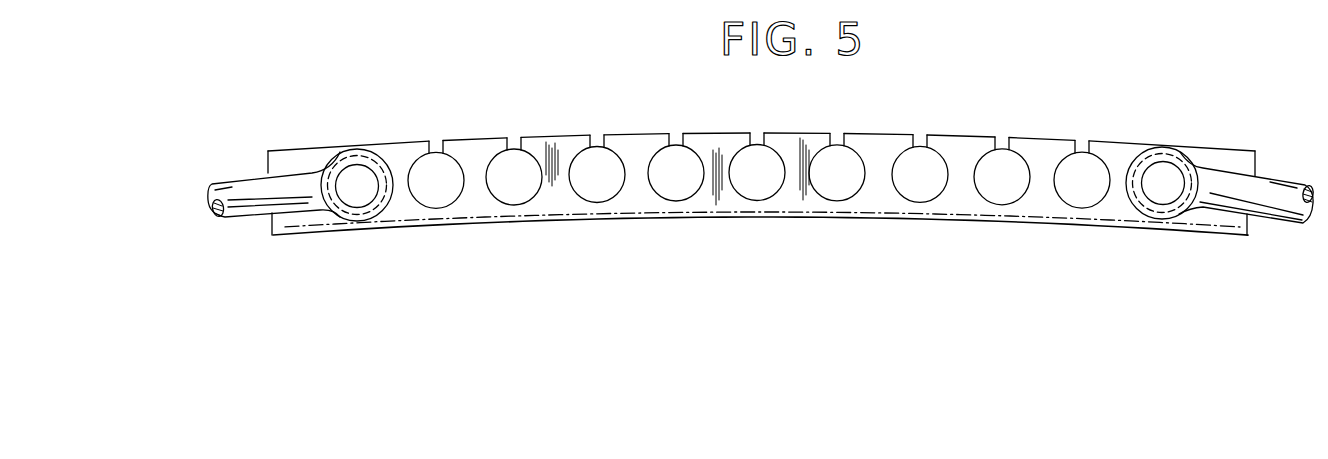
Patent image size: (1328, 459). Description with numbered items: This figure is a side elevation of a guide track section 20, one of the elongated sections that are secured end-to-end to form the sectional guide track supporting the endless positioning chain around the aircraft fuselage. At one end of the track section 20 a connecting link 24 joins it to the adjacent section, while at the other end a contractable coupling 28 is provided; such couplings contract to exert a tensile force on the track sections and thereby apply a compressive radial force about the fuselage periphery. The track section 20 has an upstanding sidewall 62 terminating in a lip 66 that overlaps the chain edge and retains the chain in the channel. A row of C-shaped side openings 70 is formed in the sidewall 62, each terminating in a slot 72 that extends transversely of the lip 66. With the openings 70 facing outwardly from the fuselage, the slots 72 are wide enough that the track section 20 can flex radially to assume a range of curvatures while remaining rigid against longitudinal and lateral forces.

The guide track section 20 is at (920, 116).
The connecting link 24 is at (1278, 185).
The contractable coupling 28 is at (232, 190).
The sidewall 62 is at (638, 187).
The lip 66 is at (557, 140).
The side opening 70 is at (676, 165).
The slot 72 is at (1090, 136).